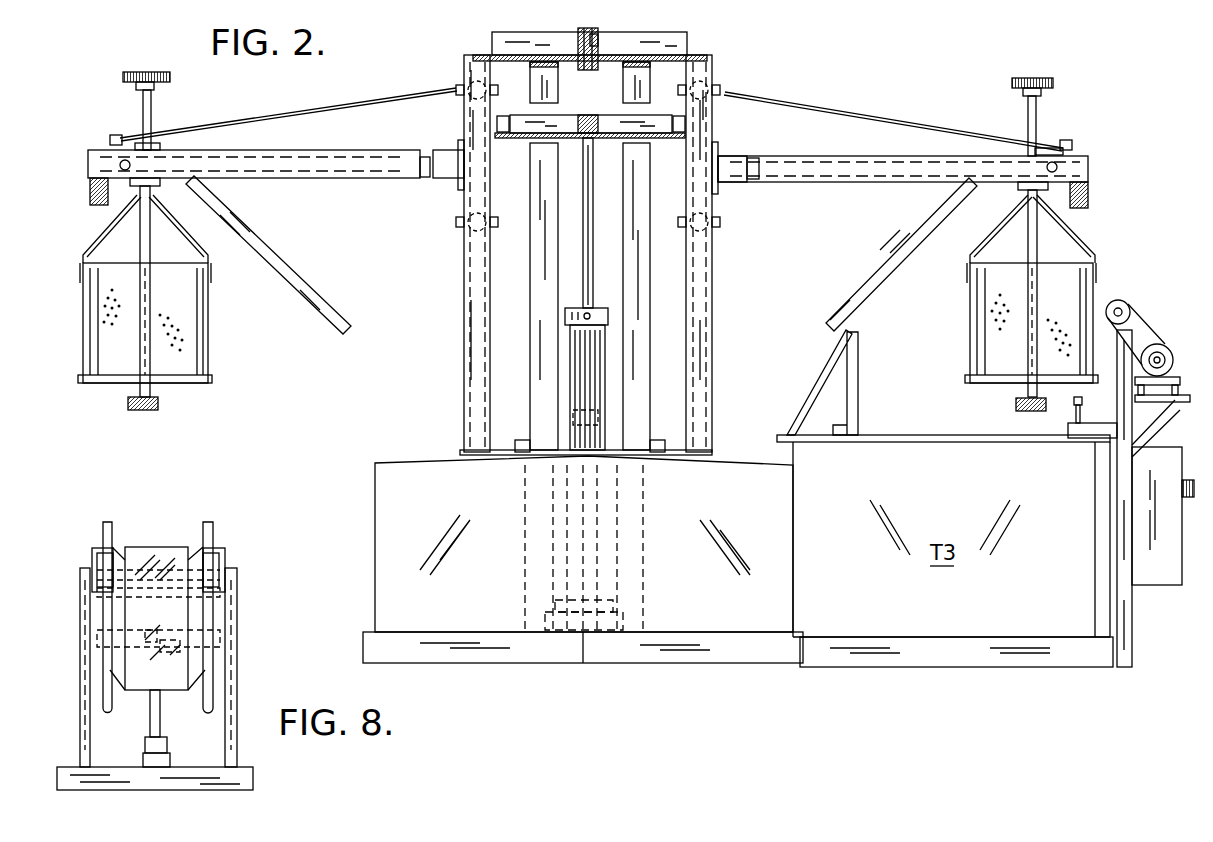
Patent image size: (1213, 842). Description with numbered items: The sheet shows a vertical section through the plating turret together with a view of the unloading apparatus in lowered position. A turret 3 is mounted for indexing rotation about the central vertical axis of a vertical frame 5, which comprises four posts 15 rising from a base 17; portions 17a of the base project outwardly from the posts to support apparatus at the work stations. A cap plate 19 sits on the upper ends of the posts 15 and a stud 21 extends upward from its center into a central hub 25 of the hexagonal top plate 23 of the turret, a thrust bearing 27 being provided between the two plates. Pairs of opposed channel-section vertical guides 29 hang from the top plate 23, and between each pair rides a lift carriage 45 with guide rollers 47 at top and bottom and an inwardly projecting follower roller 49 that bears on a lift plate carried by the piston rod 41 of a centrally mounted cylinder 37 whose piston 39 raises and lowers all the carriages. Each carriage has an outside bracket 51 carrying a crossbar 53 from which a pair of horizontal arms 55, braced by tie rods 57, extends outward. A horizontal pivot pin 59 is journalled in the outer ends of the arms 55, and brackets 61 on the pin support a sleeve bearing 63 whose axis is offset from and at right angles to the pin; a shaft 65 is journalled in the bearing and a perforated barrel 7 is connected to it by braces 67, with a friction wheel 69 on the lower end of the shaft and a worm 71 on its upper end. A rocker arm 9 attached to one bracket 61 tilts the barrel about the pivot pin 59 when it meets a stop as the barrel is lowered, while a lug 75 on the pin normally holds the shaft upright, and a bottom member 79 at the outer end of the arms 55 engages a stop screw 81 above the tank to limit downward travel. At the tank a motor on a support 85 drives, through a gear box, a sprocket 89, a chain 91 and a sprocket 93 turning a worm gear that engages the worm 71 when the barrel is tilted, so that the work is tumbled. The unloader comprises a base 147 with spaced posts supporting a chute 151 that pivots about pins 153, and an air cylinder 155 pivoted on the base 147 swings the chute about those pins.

In FIG. 2, the turret 3 is at (729, 61).
In FIG. 2, the vertical frame 5 is at (649, 209).
In FIG. 2, the perforated barrel 7 is at (76, 328).
In FIG. 2, the rocker arm 9 is at (303, 280).
In FIG. 2, the post 15 is at (532, 288).
In FIG. 2, the base 17 is at (612, 658).
In FIG. 2, the base portion 17a is at (1080, 660).
In FIG. 2, the cap plate 19 is at (566, 63).
In FIG. 2, the stud 21 is at (585, 30).
In FIG. 2, the hexagonal top plate 23 is at (690, 55).
In FIG. 2, the central hub 25 is at (599, 40).
In FIG. 2, the thrust bearing 27 is at (616, 63).
In FIG. 2, the vertical guide 29 is at (462, 280).
In FIG. 2, the cylinder 37 is at (610, 368).
In FIG. 2, the piston 39 is at (598, 410).
In FIG. 2, the piston rod 41 is at (590, 248).
In FIG. 2, the lift carriage 45 is at (712, 67).
In FIG. 2, the guide roller 47 is at (468, 97).
In FIG. 2, the follower roller 49 is at (503, 115).
In FIG. 2, the bracket 51 is at (446, 168).
In FIG. 2, the crossbar 53 is at (425, 178).
In FIG. 2, the arm 55 is at (287, 178).
In FIG. 2, the tie rod 57 is at (315, 109).
In FIG. 2, the pivot pin 59 is at (120, 165).
In FIG. 2, the bracket 61 is at (160, 148).
In FIG. 2, the sleeve bearing 63 is at (158, 185).
In FIG. 2, the shaft 65 is at (142, 248).
In FIG. 2, the brace 67 is at (108, 240).
In FIG. 2, the friction wheel 69 is at (160, 405).
In FIG. 2, the worm 71 is at (170, 78).
In FIG. 2, the lug 75 is at (88, 200).
In FIG. 2, the bottom member 79 is at (1090, 198).
In FIG. 2, the stop screw 81 is at (1082, 400).
In FIG. 2, the support 85 is at (1160, 400).
In FIG. 2, the sprocket 89 is at (1173, 360).
In FIG. 2, the chain 91 is at (1150, 340).
In FIG. 2, the sprocket 93 is at (1128, 305).
In FIG. 8, the base 147 is at (253, 780).
In FIG. 8, the chute 151 is at (165, 557).
In FIG. 8, the pin 153 is at (230, 570).
In FIG. 8, the air cylinder 155 is at (153, 720).